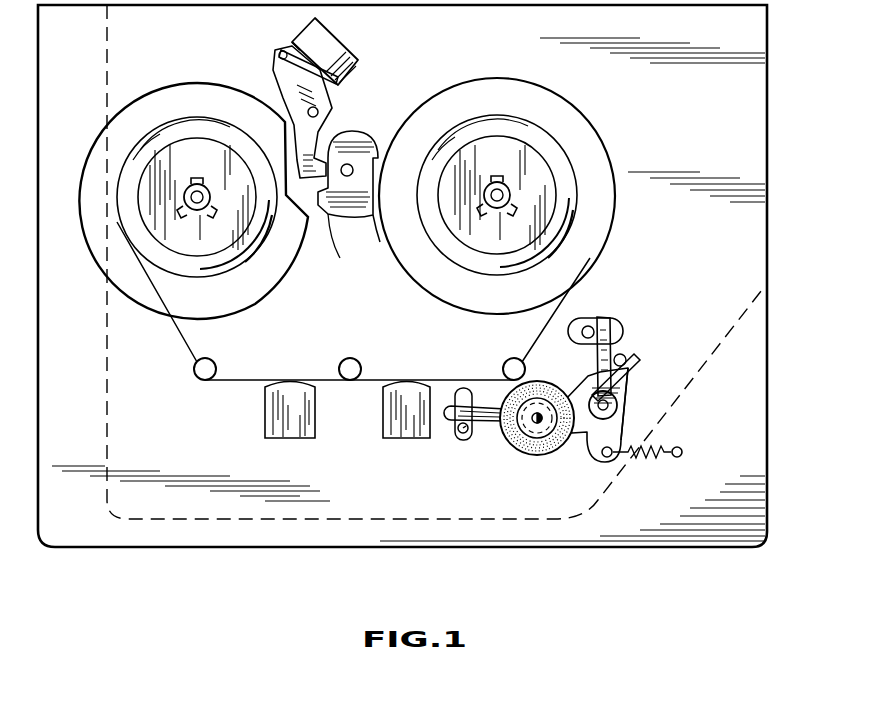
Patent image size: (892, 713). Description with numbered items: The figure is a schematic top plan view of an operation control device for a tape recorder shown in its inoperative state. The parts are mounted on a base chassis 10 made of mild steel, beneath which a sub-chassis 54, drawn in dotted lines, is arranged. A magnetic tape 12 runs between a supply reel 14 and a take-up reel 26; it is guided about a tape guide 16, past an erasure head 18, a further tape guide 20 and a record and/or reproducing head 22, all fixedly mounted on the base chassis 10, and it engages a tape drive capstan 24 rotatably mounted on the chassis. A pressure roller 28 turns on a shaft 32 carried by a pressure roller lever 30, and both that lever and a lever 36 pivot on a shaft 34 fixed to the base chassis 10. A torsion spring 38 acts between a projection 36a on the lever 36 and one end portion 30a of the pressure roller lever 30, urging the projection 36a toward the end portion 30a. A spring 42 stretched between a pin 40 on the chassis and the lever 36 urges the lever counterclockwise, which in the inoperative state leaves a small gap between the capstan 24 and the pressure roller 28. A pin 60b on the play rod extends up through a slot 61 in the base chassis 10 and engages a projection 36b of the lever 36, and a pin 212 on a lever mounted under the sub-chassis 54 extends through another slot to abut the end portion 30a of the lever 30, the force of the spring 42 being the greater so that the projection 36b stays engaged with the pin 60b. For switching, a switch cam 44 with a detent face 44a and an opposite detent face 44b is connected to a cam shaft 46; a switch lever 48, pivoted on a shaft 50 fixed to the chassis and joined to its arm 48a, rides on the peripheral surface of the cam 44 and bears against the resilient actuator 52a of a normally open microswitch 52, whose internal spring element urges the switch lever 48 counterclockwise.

The base chassis 10 is at (768, 357).
The magnetic tape 12 is at (171, 341).
The supply reel 14 is at (162, 106).
The tape guide 16 is at (211, 364).
The erasure head 18 is at (276, 421).
The tape guide 20 is at (341, 363).
The record and/or reproducing head 22 is at (396, 431).
The tape drive capstan 24 is at (507, 363).
The take-up reel 26 is at (584, 121).
The pressure roller 28 is at (539, 456).
The pressure roller lever 30 is at (597, 441).
The end portion of the pressure roller lever 30a is at (606, 314).
The shaft 32 is at (540, 411).
The shaft 34 is at (618, 399).
The lever 36 is at (616, 432).
The projection 36a is at (616, 352).
The projection 36b is at (449, 408).
The torsion spring 38 is at (626, 371).
The pin 40 is at (681, 447).
The spring 42 is at (645, 455).
The switch cam 44 is at (351, 133).
The detent face 44a is at (350, 177).
The opposite detent face 44b is at (378, 244).
The cam shaft 46 is at (357, 240).
The switch lever 48 is at (284, 96).
The brake lever rod 48a is at (281, 58).
The shaft 50 is at (319, 111).
The microswitch 52 is at (346, 46).
The resilient actuator 52a is at (290, 45).
The sub-chassis 54 is at (742, 340).
The pin 60b is at (470, 441).
The slot 61 is at (460, 431).
The pin 212 is at (590, 326).